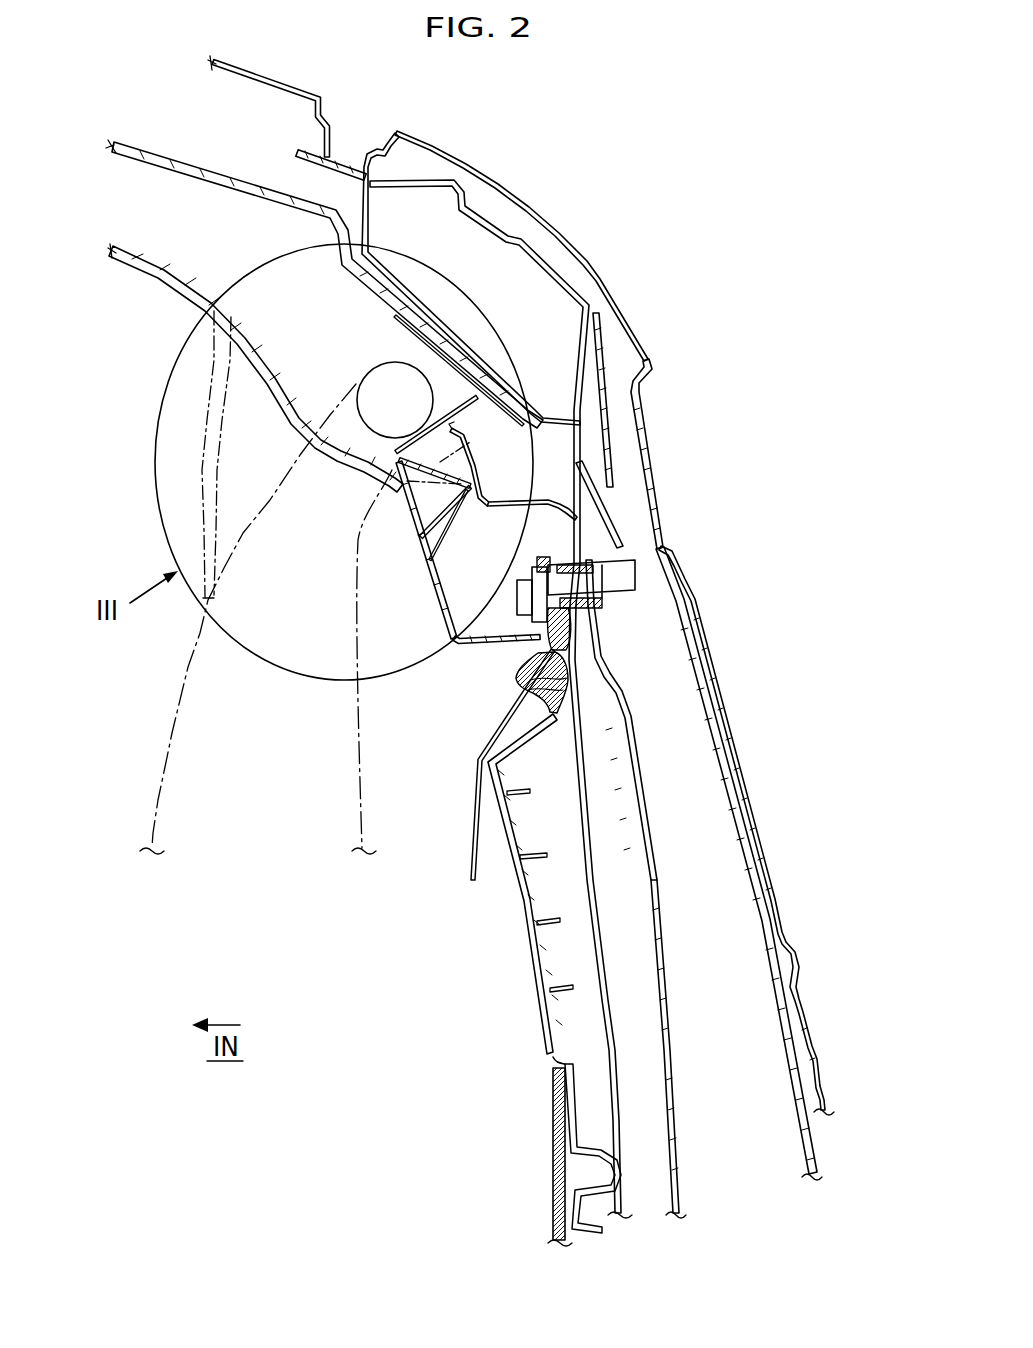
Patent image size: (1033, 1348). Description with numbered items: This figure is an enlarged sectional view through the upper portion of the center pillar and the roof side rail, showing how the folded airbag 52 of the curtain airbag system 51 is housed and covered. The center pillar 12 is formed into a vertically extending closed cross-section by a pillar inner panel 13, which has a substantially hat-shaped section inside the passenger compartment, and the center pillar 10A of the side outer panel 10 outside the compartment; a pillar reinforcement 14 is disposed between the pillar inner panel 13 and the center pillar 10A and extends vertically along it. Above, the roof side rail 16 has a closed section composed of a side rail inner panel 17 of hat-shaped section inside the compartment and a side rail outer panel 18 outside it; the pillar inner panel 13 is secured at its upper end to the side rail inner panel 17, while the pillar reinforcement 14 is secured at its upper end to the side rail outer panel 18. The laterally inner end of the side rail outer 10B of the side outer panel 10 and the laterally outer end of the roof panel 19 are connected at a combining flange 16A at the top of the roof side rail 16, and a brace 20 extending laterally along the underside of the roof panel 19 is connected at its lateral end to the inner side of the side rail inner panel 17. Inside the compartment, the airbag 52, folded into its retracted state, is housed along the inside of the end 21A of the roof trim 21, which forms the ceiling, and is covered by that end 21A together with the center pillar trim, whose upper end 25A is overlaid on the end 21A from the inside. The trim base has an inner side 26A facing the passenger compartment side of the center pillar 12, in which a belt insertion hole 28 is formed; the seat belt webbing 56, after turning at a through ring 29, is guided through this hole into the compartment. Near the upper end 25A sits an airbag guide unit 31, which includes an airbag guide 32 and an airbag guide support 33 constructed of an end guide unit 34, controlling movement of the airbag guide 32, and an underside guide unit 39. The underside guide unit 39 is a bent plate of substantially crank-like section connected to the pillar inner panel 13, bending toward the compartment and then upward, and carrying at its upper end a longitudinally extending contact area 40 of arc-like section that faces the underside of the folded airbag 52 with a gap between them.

The side outer panel 10 is at (636, 337).
The center pillar 10A is at (752, 803).
The side rail outer 10B is at (527, 205).
The center pillar 12 is at (650, 853).
The pillar inner panel 13 is at (653, 920).
The pillar reinforcement 14 is at (720, 718).
The roof side rail 16 is at (482, 222).
The combining flange 16A is at (300, 163).
The side rail inner panel 17 is at (370, 228).
The side rail outer panel 18 is at (463, 192).
The roof panel 19 is at (267, 72).
The brace 20 is at (207, 177).
The roof trim 21 is at (150, 273).
The end of roof trim 21A is at (278, 403).
The upper end of center pillar trim 25A is at (395, 485).
The inner side 26A is at (454, 638).
The belt insertion hole 28 is at (517, 660).
The through ring 29 is at (572, 640).
The airbag guide unit 31 is at (545, 464).
The airbag guide 32 is at (450, 378).
The airbag guide support 33 is at (560, 530).
The end guide unit 34 is at (466, 522).
The underside guide unit 39 is at (507, 506).
The contact area 40 is at (465, 434).
The curtain airbag system 51 is at (333, 382).
The airbag 52 is at (386, 388).
The seat belt webbing 56 is at (470, 849).